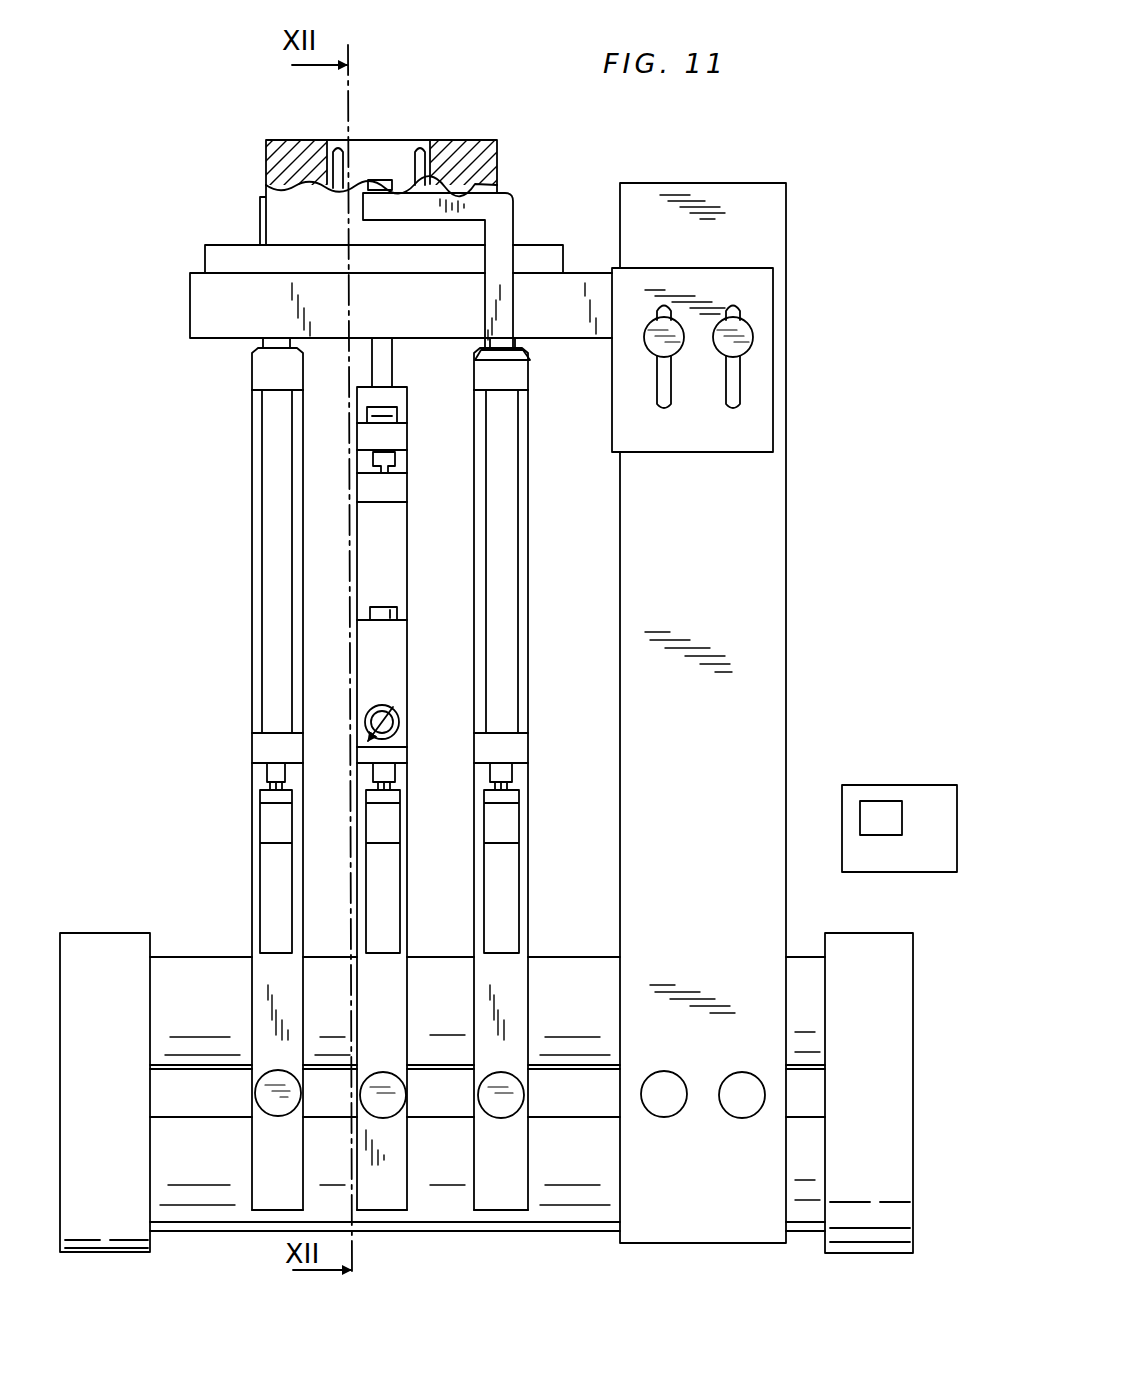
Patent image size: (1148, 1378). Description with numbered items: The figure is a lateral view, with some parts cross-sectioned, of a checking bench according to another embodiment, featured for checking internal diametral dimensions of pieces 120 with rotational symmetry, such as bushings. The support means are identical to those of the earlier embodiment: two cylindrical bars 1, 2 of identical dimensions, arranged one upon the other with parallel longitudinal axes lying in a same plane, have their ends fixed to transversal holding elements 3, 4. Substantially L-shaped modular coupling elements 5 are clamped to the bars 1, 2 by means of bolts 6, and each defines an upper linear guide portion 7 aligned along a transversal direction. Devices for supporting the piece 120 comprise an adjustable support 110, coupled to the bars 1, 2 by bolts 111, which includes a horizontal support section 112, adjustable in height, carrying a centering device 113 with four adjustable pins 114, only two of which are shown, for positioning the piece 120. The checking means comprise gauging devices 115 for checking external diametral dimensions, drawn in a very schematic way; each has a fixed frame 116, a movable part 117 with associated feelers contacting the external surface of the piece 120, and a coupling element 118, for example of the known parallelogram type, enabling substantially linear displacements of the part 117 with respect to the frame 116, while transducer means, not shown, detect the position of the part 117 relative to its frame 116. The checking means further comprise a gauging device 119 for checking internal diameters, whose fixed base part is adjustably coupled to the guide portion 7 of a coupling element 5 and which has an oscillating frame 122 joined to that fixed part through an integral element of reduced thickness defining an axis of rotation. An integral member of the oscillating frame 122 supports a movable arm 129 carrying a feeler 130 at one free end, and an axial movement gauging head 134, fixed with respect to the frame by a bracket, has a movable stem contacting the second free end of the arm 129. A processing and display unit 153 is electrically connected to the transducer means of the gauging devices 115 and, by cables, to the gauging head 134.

The cylindrical bar 1 is at (214, 992).
The cylindrical bar 2 is at (175, 1140).
The transversal holding element 3 is at (98, 940).
The transversal holding element 4 is at (838, 943).
The modular coupling element 5 is at (372, 870).
The bolt 6 is at (275, 1108).
The linear guide portion 7 is at (370, 780).
The adjustable support 110 is at (757, 503).
The bolt 111 is at (735, 1110).
The horizontal support section 112 is at (623, 298).
The centering device 113 is at (217, 245).
The adjustable pin 114 is at (342, 157).
The gauging device 115 is at (335, 774).
The fixed frame 116 is at (260, 748).
The movable part 117 is at (493, 203).
The coupling element 118 is at (273, 603).
The gauging device 119 is at (340, 502).
The piece 120 is at (482, 157).
The oscillating frame 122 is at (380, 647).
The movable arm 129 is at (377, 355).
The feeler 130 is at (377, 182).
The axial movement gauging head 134 is at (386, 705).
The processing and display unit 153 is at (915, 792).